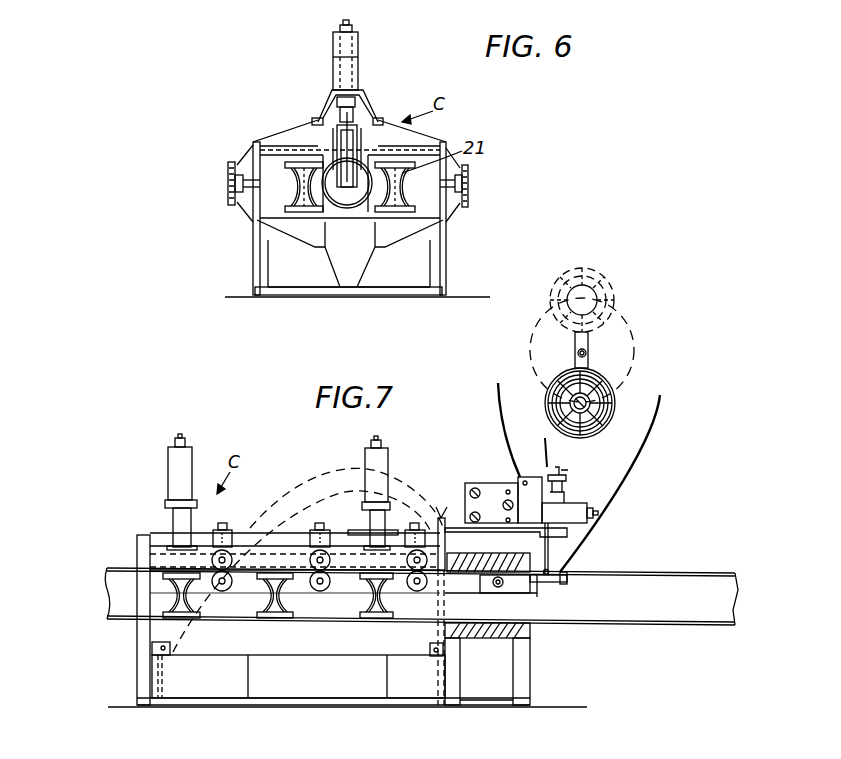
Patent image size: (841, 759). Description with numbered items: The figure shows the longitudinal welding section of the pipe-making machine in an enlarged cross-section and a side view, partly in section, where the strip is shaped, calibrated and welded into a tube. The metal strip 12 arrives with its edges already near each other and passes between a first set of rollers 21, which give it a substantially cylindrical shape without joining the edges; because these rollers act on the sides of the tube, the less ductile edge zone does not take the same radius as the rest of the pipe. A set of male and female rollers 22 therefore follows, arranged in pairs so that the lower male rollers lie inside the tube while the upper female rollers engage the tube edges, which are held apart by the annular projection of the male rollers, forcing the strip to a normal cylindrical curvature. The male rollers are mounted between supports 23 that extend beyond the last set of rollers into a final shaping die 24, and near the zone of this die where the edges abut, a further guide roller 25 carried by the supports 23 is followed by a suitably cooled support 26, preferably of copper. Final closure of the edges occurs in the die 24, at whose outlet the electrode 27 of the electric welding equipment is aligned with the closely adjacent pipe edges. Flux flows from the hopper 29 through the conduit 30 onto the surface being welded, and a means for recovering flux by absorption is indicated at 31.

In FIG. 7, the metal strip 12 is at (120, 568).
In FIG. 6, the first set of rollers 21 is at (287, 195).
In FIG. 6, the male and female rollers 22 is at (370, 101).
In FIG. 7, the male and female rollers 22 is at (228, 545).
In FIG. 7, the supports 23 is at (243, 588).
In FIG. 7, the final shaping die 24 is at (489, 638).
In FIG. 7, the guide roller 25 is at (500, 588).
In FIG. 7, the cooled support 26 is at (567, 581).
In FIG. 7, the electrode 27 is at (551, 549).
In FIG. 7, the hopper 29 is at (165, 612).
In FIG. 7, the conduit 30 is at (500, 389).
In FIG. 7, the flux recovering means 31 is at (628, 481).